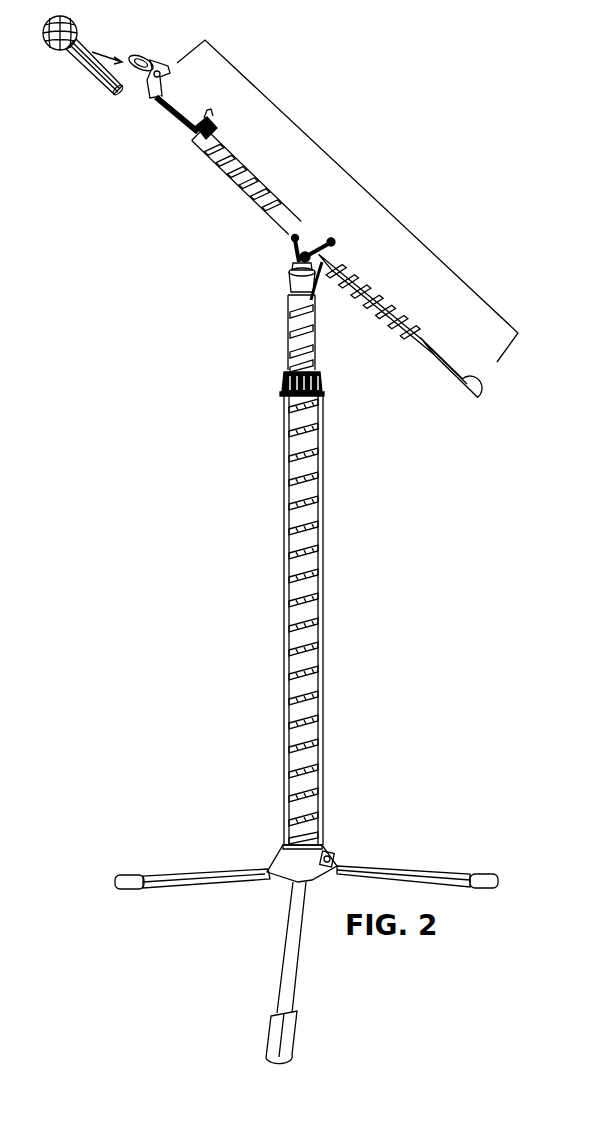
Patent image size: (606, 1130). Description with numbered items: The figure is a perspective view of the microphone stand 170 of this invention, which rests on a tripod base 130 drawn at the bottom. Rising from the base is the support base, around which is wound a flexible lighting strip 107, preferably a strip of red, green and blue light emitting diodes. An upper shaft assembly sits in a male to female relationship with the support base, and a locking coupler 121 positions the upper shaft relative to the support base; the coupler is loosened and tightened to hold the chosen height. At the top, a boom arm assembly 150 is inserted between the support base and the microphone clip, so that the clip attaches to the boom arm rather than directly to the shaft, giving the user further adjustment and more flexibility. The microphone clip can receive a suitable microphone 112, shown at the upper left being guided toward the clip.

The microphone 112 is at (90, 85).
The boom arm assembly 150 is at (394, 216).
The locking coupler 121 is at (272, 386).
The flexible lighting strip 107 is at (323, 833).
The microphone stand 170 is at (311, 570).
The tripod base 130 is at (260, 864).